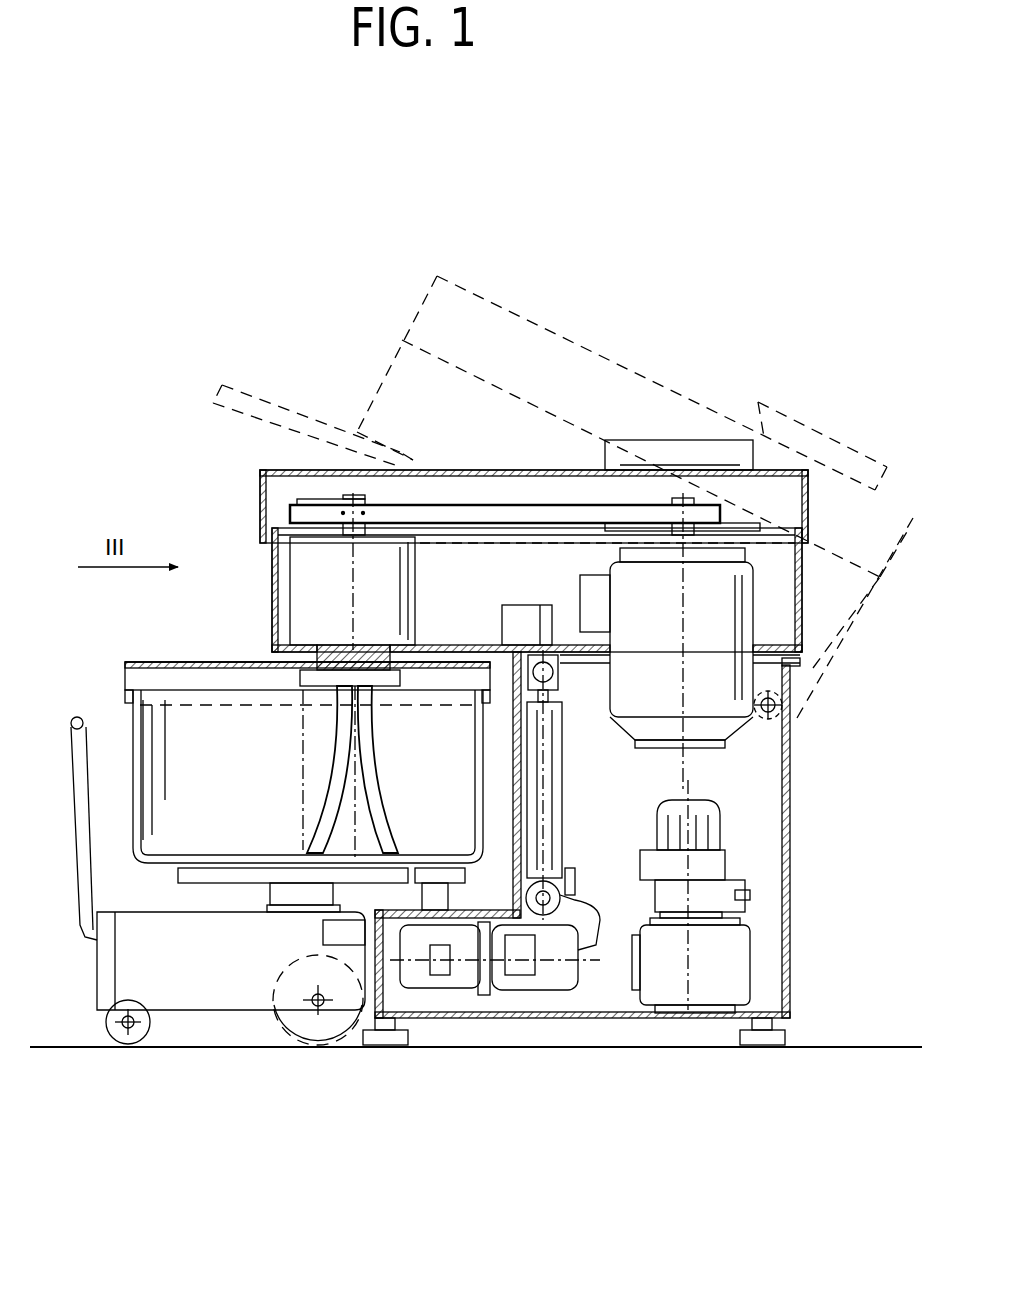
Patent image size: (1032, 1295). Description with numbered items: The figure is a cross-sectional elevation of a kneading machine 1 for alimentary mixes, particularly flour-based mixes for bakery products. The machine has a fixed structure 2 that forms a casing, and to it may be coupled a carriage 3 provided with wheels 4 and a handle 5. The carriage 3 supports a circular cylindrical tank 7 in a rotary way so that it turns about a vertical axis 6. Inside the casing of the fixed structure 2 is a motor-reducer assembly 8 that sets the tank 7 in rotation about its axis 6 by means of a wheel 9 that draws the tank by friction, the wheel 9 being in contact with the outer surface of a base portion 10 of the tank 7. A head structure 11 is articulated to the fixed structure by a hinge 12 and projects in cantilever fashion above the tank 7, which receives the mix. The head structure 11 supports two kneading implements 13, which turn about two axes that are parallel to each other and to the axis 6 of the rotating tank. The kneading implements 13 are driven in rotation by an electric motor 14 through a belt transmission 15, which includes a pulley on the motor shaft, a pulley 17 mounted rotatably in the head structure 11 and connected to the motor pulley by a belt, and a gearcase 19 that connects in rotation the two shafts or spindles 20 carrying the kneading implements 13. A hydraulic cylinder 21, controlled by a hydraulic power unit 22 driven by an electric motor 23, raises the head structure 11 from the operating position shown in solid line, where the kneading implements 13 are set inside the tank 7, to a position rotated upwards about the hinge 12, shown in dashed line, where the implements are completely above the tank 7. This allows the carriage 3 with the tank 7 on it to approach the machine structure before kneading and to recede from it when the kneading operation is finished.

The kneading machine 1 is at (166, 478).
The fixed structure 2 is at (800, 776).
The carriage 3 is at (75, 978).
The wheels 4 is at (140, 1048).
The handle 5 is at (77, 717).
The vertical axis 6 is at (302, 755).
The cylindrical tank 7 is at (122, 705).
The motor-reducer assembly 8 is at (495, 1012).
The wheel 9 is at (415, 885).
The base portion 10 is at (255, 880).
The head structure 11 is at (655, 378).
The hinge 12 is at (795, 718).
The kneading implements 13 is at (320, 796).
The electric motor 14 is at (756, 586).
The belt transmission 15 is at (545, 501).
The pulley 17 is at (315, 497).
The gearcase 19 is at (416, 568).
The shafts or spindles 20 is at (330, 640).
The hydraulic cylinder 21 is at (565, 800).
The hydraulic power unit 22 is at (752, 950).
The electric motor 23 is at (725, 824).